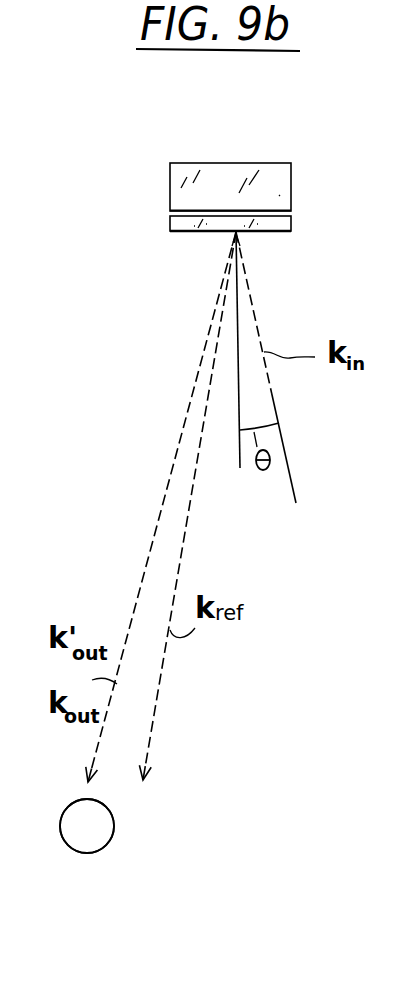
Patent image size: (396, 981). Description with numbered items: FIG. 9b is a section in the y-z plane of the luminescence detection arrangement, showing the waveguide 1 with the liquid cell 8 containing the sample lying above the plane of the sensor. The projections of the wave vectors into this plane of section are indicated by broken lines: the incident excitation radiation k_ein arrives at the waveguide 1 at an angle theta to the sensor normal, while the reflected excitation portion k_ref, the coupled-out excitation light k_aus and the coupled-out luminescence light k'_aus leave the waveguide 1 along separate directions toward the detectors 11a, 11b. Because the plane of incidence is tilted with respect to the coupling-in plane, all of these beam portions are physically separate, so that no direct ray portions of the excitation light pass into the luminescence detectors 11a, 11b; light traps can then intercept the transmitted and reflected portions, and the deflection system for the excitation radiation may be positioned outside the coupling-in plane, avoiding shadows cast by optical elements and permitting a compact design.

The liquid cell 8 is at (280, 186).
The waveguide 1 is at (274, 226).
The detector 11a is at (113, 832).
The detector 11b is at (87, 826).